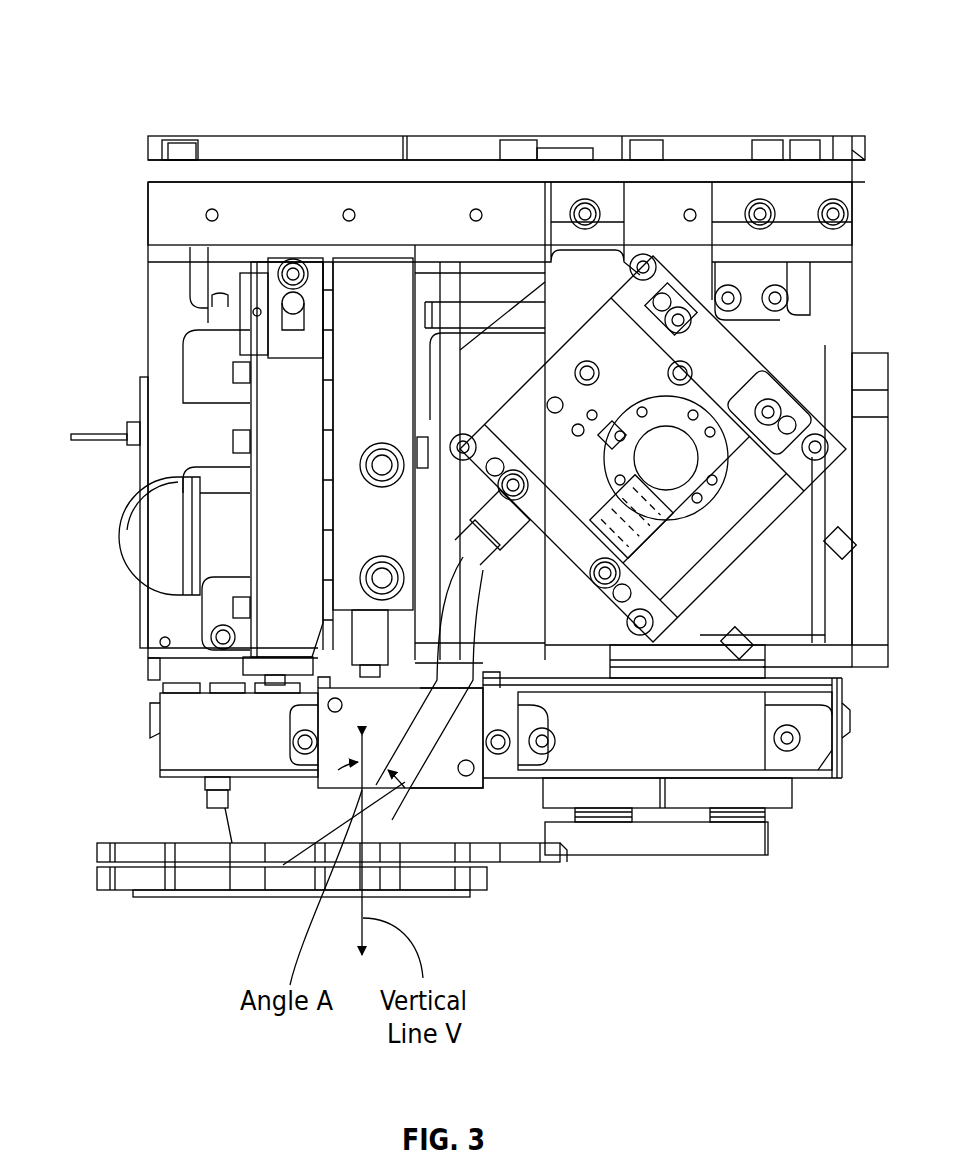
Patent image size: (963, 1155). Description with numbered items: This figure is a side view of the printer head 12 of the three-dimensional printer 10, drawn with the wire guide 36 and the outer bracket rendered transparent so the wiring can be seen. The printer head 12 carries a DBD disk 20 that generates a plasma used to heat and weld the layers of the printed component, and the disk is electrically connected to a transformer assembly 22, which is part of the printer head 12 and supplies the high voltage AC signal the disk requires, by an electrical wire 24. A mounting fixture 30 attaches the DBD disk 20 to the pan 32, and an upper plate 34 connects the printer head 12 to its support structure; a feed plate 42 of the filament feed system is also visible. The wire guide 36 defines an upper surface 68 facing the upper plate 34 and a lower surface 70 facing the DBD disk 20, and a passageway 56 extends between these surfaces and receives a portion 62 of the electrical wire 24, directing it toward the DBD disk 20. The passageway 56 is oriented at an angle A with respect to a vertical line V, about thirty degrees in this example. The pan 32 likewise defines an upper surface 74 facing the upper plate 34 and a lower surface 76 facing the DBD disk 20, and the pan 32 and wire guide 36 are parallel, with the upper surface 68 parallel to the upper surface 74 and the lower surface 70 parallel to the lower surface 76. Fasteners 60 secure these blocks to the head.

The three-dimensional printer 10 is at (143, 45).
The printer head 12 is at (812, 73).
The DBD disk 20 is at (163, 895).
The transformer assembly 22 is at (735, 412).
The electrical wire 24 is at (470, 572).
The mounting fixture 30 is at (100, 850).
The pan 32 is at (683, 742).
The upper plate 34 is at (157, 213).
The wire guide 36 is at (405, 782).
The feed plate 42 is at (350, 415).
The passageway 56 is at (455, 788).
The fastener 60 is at (295, 742).
The portion of the electrical wire 62 is at (425, 708).
The upper surface 68 is at (332, 692).
The lower surface 70 is at (467, 790).
The upper surface 74 is at (160, 685).
The lower surface 76 is at (175, 780).